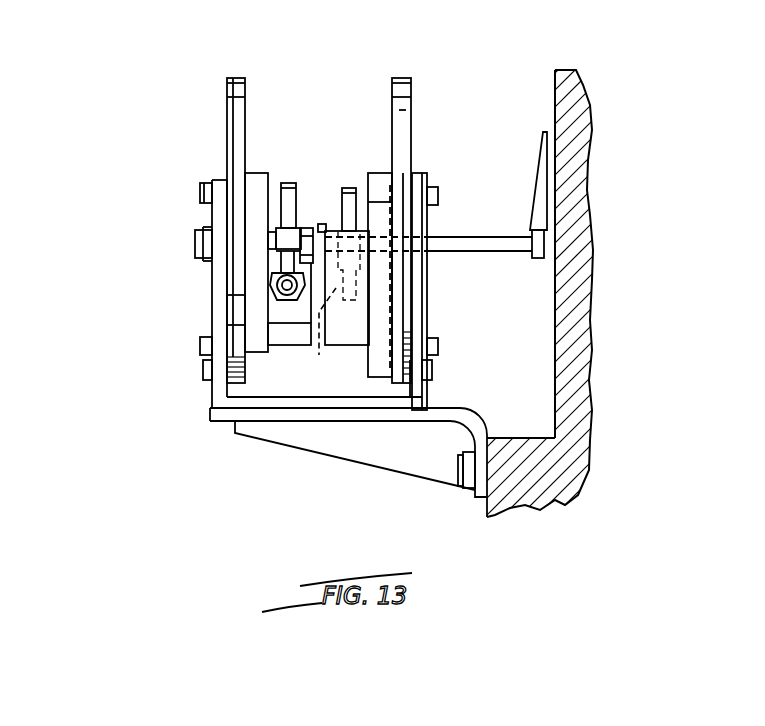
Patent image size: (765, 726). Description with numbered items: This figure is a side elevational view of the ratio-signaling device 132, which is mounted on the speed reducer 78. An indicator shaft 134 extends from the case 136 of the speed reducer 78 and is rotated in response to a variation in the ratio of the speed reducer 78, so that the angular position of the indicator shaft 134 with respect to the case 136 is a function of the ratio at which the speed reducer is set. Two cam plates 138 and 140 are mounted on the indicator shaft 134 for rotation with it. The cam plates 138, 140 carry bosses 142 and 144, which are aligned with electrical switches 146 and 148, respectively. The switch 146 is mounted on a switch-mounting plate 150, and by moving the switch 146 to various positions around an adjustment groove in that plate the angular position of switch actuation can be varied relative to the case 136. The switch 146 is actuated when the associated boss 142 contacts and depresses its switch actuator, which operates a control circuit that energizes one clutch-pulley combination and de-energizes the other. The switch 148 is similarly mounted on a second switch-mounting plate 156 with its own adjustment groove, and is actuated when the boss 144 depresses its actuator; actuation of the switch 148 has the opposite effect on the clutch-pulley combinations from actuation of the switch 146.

The ratio-signaling device 132 is at (163, 116).
The switch-mounting plate 150 is at (250, 86).
The boss 144 is at (272, 233).
The cam plate 140 is at (290, 178).
The cam plate 138 is at (346, 183).
The electrical switch 148 is at (351, 347).
The indicator shaft 134 is at (466, 234).
The boss 142 is at (316, 334).
The electrical switch 146 is at (285, 345).
The switch-mounting plate 156 is at (418, 82).
The speed reducer 78 is at (551, 95).
The case 136 is at (555, 297).